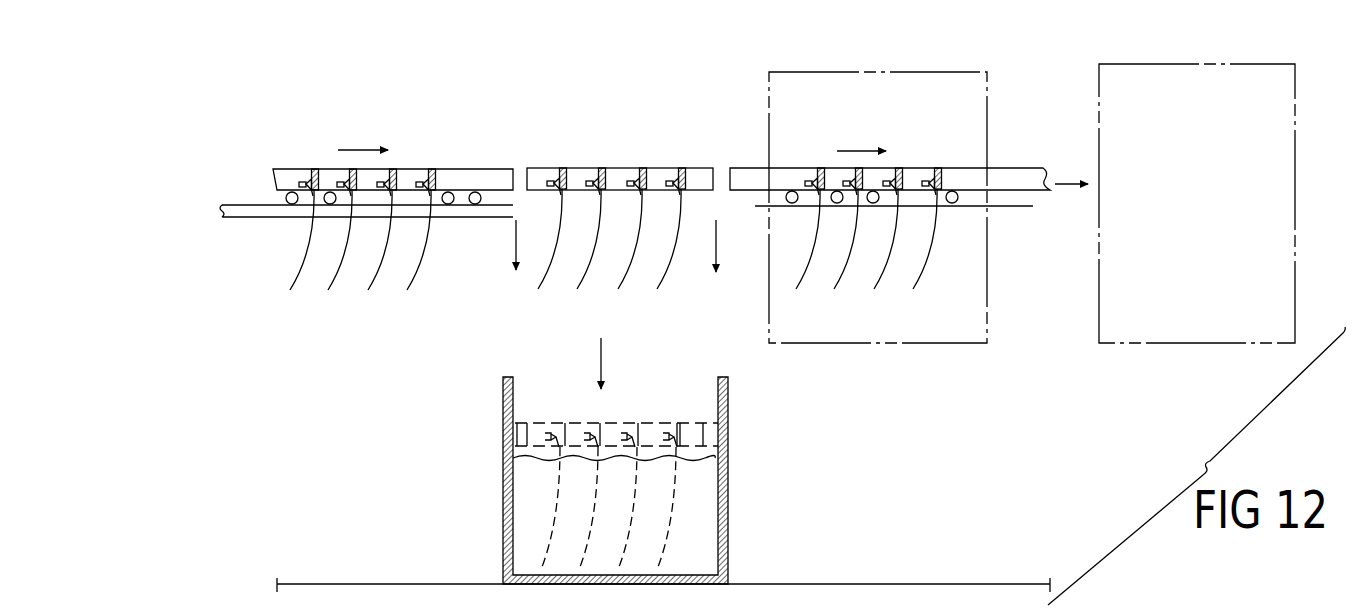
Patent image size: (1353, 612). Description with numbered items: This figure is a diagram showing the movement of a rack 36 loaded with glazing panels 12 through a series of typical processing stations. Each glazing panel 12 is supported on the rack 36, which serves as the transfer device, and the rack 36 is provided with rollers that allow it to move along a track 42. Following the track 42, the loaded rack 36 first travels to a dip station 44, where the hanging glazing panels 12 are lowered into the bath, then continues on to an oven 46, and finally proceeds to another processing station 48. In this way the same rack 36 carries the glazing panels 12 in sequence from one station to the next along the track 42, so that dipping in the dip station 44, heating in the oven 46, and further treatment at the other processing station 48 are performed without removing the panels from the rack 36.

The glazing panel 12 is at (299, 277).
The rack 36 is at (314, 163).
The track 42 is at (240, 203).
The dip station 44 is at (500, 369).
The oven 46 is at (752, 136).
The other processing station 48 is at (1072, 130).